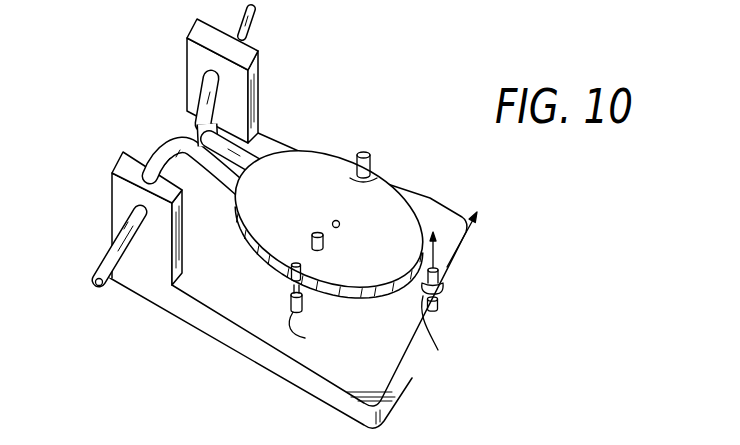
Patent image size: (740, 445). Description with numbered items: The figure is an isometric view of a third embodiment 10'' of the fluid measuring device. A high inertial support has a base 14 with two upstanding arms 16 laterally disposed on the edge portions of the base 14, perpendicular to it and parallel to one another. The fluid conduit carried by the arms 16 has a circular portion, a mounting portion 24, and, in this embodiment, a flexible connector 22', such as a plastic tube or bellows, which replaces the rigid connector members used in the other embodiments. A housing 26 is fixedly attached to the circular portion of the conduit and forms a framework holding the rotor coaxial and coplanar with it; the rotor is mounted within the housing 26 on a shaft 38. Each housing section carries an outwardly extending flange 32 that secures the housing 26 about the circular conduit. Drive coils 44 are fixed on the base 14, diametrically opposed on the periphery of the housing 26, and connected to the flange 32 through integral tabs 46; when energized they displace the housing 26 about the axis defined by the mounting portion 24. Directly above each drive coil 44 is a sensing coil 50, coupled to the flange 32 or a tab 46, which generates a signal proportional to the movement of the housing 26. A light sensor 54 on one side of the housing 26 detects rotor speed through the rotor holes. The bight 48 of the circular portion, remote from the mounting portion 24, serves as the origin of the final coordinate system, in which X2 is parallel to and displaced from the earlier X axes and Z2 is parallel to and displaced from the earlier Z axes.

The third embodiment 10'' is at (292, 76).
The base 14 is at (223, 328).
The upstanding arm 16 is at (123, 200).
The flexible connector 22' is at (265, 114).
The mounting portion 24 is at (192, 110).
The housing 26 is at (383, 222).
The flange 32 is at (383, 359).
The shaft 38 is at (337, 228).
The drive coil 44 is at (299, 311).
The tab 46 is at (377, 178).
The bight 48 is at (428, 333).
The sensing coil 50 is at (371, 122).
The light sensor 54 is at (317, 233).
The Z2 axis Z2 is at (443, 232).
The X2 axis X2 is at (479, 224).